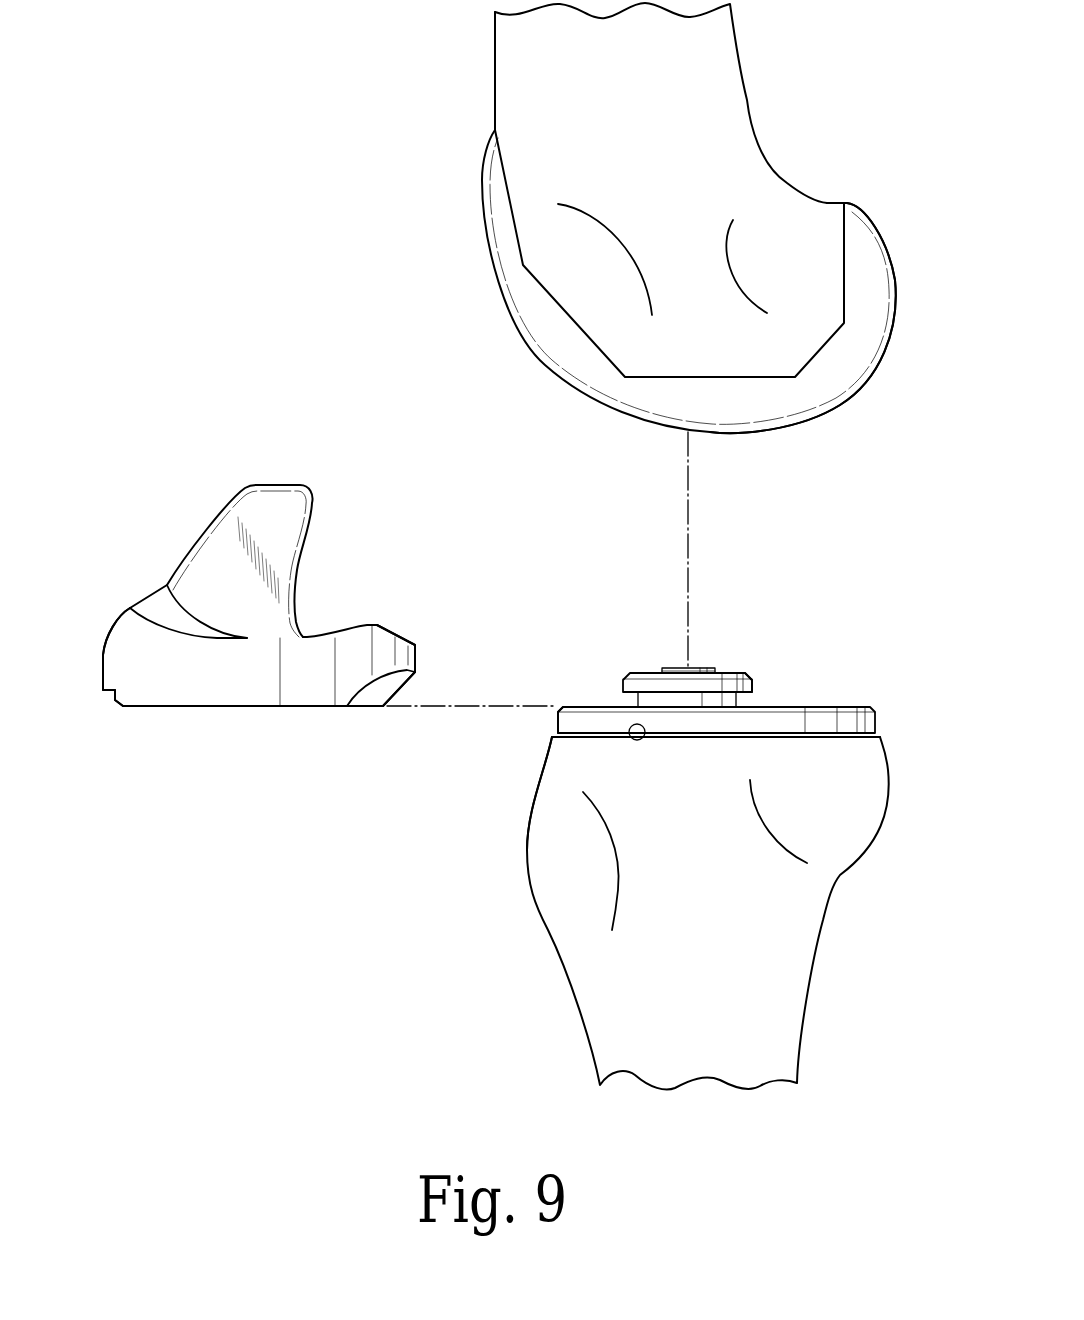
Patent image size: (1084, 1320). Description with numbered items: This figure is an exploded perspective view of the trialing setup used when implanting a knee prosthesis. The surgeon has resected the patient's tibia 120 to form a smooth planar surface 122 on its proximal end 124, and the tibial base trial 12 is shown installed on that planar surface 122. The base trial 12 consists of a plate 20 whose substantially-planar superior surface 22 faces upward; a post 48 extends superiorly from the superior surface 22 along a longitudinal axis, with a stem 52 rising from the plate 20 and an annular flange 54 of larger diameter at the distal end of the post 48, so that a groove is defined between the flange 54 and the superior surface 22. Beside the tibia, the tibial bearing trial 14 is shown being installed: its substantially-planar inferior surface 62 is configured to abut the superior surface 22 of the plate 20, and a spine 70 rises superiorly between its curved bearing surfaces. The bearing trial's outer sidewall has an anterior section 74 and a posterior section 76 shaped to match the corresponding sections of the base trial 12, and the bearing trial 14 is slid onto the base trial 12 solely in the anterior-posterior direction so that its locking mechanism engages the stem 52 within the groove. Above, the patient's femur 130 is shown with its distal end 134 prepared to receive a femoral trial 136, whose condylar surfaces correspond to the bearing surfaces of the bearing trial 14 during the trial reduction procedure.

The tibial base trial 12 is at (754, 678).
The tibial bearing trial 14 is at (258, 608).
The plate 20 is at (843, 718).
The superior surface 22 is at (590, 705).
The post 48 is at (647, 682).
The stem 52 is at (730, 702).
The flange 54 is at (730, 682).
The inferior surface 62 is at (293, 707).
The spine 70 is at (270, 510).
The anterior section 74 is at (103, 675).
The posterior section 76 is at (417, 660).
The tibia 120 is at (878, 803).
The planar surface 122 is at (643, 738).
The proximal end 124 is at (560, 772).
The femur 130 is at (745, 148).
The distal end 134 is at (827, 217).
The femoral trial 136 is at (798, 395).